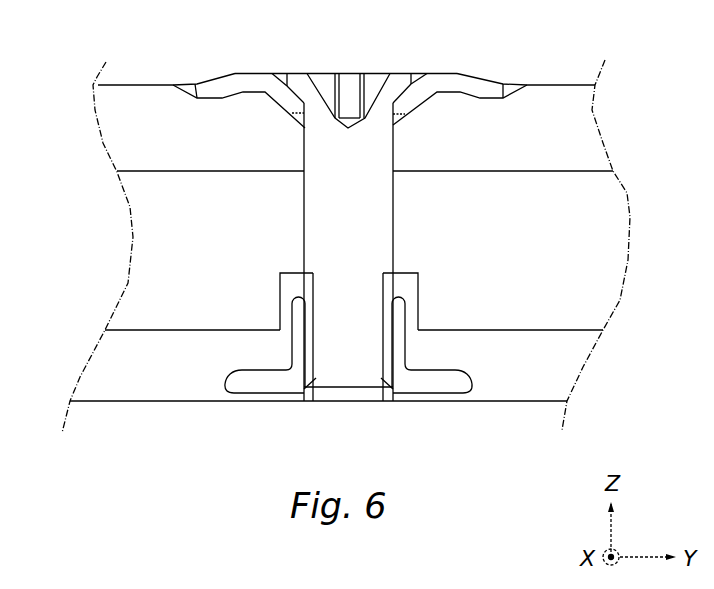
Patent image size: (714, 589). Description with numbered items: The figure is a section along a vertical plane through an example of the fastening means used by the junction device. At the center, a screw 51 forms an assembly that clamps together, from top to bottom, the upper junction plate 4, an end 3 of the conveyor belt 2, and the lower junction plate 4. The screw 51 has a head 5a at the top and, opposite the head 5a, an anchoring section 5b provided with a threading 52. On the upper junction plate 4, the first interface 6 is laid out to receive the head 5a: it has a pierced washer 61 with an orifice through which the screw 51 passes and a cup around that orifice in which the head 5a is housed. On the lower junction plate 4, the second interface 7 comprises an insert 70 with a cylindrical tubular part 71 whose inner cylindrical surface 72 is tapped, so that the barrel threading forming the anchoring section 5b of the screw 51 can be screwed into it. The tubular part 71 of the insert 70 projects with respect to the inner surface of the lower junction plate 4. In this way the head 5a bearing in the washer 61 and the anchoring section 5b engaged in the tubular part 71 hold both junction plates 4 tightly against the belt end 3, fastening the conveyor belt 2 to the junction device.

The conveyor belt 2 is at (148, 210).
The end of conveyor belt 3 is at (366, 245).
The junction plate 4 is at (138, 80).
The head 5a is at (398, 72).
The anchoring section 5b is at (348, 339).
The first interface 6 is at (210, 72).
The pierced washer 61 is at (240, 90).
The screw 51 is at (404, 250).
The threading 52 is at (387, 284).
The second interface 7 is at (356, 379).
The insert 70 is at (442, 397).
The tubular part 71 is at (405, 347).
The inner cylindrical surface 72 is at (314, 350).